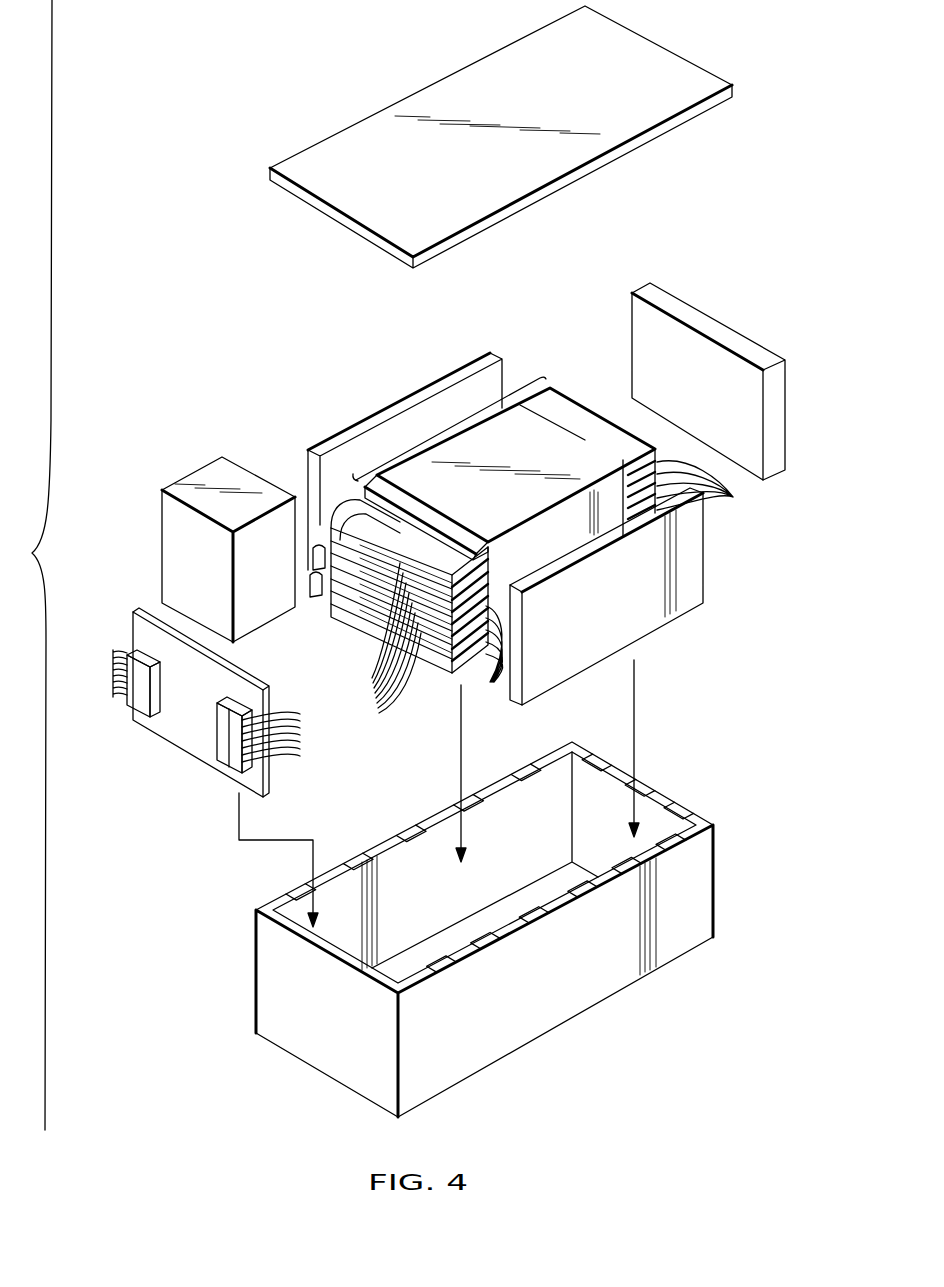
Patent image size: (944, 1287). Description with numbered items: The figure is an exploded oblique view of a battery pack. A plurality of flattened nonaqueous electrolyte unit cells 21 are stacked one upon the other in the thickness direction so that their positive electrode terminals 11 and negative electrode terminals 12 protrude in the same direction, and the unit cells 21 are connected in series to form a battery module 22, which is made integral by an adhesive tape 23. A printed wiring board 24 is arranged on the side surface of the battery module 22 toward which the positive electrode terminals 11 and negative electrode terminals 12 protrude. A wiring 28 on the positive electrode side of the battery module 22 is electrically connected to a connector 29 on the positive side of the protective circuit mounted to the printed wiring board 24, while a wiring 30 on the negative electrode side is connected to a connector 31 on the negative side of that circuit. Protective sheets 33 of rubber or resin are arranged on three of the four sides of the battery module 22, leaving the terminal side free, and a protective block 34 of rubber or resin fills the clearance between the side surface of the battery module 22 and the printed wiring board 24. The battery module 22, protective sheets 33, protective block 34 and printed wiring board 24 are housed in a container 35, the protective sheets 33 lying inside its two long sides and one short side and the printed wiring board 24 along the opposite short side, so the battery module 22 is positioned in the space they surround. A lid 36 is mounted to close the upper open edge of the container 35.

The positive electrode terminal 11 is at (395, 565).
The negative electrode terminal 12 is at (372, 522).
The unit cell 21 is at (622, 584).
The battery module 22 is at (447, 417).
The adhesive tape 23 is at (523, 433).
The printed wiring board 24 is at (178, 735).
The wiring 28 is at (304, 767).
The connector 29 is at (225, 757).
The wiring 30 is at (308, 580).
The connector 31 is at (107, 640).
The protective sheet 33 is at (368, 423).
The protective block 34 is at (198, 480).
The container 35 is at (702, 905).
The lid 36 is at (677, 68).